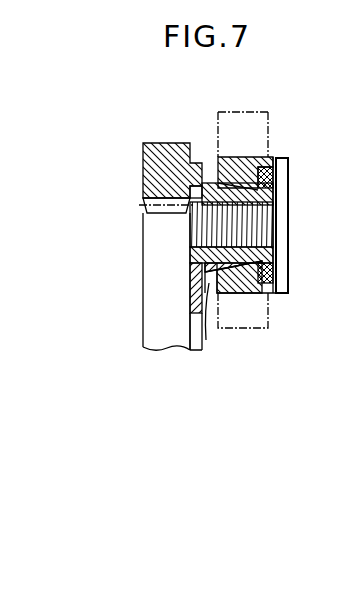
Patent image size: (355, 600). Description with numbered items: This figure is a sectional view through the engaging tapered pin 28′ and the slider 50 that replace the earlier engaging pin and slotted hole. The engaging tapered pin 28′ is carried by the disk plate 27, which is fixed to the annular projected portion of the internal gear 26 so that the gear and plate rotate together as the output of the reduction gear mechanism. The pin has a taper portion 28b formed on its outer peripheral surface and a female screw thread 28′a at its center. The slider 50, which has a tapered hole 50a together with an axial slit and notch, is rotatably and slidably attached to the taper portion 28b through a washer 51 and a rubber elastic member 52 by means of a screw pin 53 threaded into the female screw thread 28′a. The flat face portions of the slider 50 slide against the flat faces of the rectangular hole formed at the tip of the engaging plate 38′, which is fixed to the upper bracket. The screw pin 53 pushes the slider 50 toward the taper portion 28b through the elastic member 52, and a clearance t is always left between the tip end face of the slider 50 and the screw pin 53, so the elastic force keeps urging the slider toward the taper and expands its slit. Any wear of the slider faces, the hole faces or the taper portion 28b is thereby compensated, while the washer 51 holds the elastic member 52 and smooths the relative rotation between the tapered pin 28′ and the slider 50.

The internal gear 26 is at (147, 172).
The disk plate 27 is at (180, 285).
The female screw thread 28′a is at (187, 236).
The taper portion 28b is at (214, 176).
The clearance t is at (210, 176).
The engaging plate 38′ is at (262, 150).
The washer 51 is at (262, 297).
The slider 50 is at (245, 297).
The tapered hole 50a is at (232, 297).
The elastic member 52 is at (274, 266).
The screw pin 53 is at (283, 223).
The engaging tapered pin 28′ is at (194, 352).